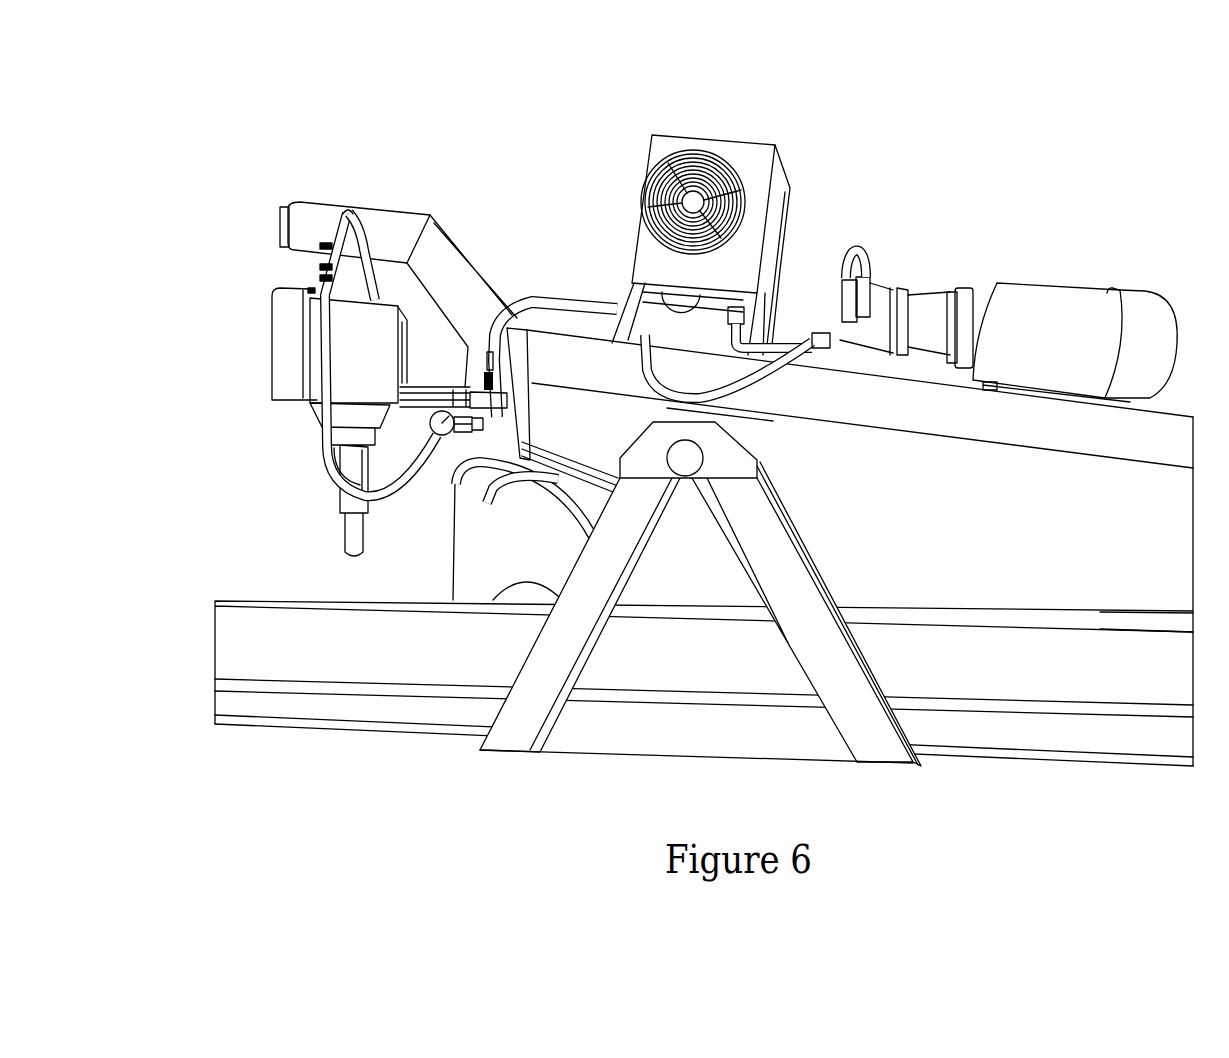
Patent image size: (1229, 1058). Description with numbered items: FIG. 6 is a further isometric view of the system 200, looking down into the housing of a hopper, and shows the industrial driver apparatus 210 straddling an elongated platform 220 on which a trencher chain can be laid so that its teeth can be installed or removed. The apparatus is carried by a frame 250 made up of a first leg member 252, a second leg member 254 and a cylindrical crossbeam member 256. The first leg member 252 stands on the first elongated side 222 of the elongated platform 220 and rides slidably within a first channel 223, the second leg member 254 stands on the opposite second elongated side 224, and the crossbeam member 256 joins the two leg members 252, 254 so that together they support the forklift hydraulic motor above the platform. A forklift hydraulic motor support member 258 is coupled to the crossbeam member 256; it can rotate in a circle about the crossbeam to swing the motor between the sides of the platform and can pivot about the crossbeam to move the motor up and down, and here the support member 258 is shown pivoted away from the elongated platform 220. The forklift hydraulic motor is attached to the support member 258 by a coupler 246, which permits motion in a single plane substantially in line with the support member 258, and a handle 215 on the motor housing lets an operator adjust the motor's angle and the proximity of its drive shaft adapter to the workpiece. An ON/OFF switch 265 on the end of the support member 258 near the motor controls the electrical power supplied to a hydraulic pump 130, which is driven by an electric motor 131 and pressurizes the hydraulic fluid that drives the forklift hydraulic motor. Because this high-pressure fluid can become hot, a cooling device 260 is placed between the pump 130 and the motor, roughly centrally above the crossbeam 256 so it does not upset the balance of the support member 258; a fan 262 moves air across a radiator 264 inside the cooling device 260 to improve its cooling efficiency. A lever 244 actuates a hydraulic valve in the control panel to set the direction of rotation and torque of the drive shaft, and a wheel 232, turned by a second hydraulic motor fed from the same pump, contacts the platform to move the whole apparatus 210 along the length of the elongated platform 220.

The system 200 is at (330, 327).
The forklift hydraulic motor support member 258 is at (413, 232).
The coupler 246 is at (348, 208).
The ON/OFF switch 265 is at (280, 223).
The handle 215 is at (268, 338).
The industrial driver apparatus 210 is at (325, 361).
The lever 244 is at (405, 498).
The first channel 223 is at (322, 642).
The first elongated side 222 is at (272, 713).
The wheel 232 is at (502, 600).
The first leg member 252 is at (615, 543).
The crossbeam member 256 is at (683, 443).
The second leg member 254 is at (778, 502).
The frame 250 is at (707, 592).
The elongated platform 220 is at (1034, 650).
The second elongated side 224 is at (1158, 627).
The hydraulic pump 130 is at (850, 252).
The electric motor 131 is at (993, 283).
The cooling device 260 is at (652, 138).
The radiator 264 is at (653, 137).
The fan 262 is at (737, 177).